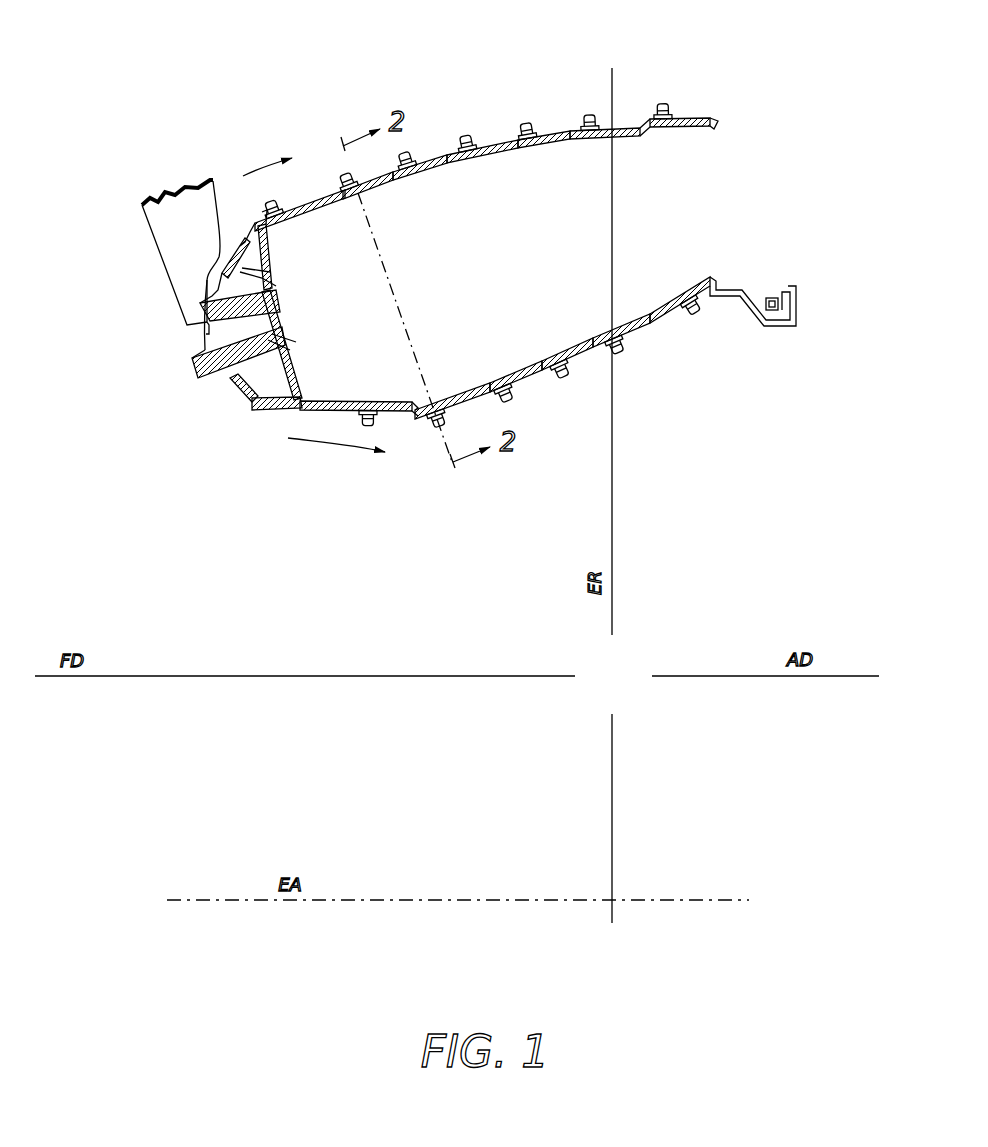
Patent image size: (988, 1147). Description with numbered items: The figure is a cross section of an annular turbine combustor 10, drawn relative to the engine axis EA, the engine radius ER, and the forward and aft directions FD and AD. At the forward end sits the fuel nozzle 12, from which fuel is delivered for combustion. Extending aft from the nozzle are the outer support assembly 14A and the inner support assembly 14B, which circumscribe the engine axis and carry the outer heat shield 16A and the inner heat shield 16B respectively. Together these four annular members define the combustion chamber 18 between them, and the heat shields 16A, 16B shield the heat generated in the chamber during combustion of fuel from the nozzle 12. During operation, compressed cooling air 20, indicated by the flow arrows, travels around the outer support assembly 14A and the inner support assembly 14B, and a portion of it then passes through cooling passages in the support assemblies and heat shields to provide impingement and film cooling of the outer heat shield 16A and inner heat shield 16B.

The annular turbine combustor 10 is at (418, 92).
The fuel nozzle 12 is at (195, 365).
The outer support assembly 14A is at (483, 120).
The inner support assembly 14B is at (545, 395).
The outer heat shield 16A is at (530, 157).
The inner heat shield 16B is at (543, 352).
The combustion chamber 18 is at (482, 252).
The cooling air 20 is at (268, 165).